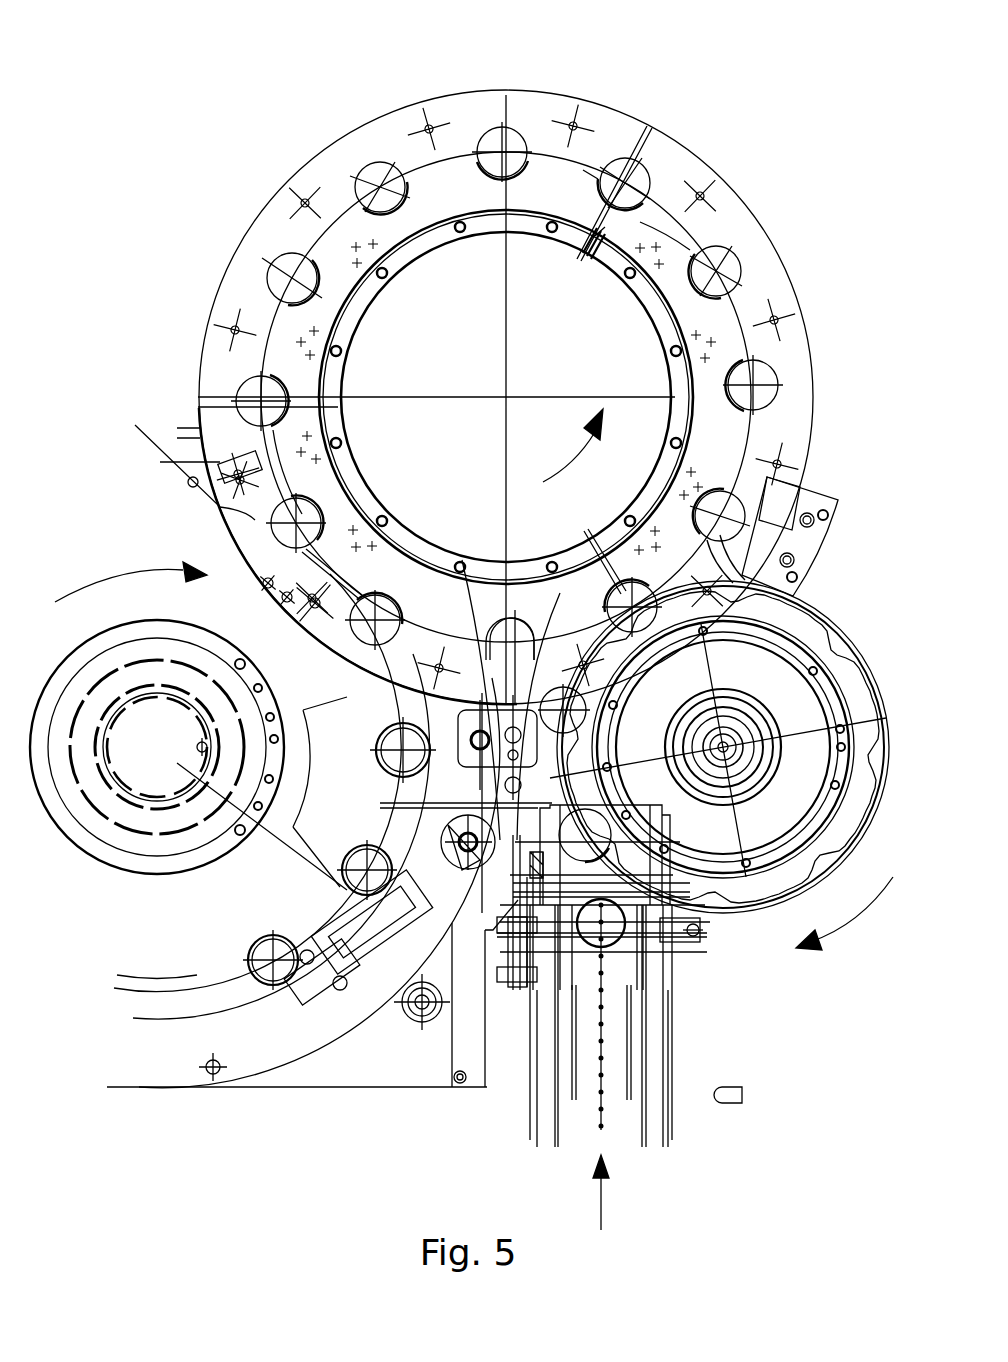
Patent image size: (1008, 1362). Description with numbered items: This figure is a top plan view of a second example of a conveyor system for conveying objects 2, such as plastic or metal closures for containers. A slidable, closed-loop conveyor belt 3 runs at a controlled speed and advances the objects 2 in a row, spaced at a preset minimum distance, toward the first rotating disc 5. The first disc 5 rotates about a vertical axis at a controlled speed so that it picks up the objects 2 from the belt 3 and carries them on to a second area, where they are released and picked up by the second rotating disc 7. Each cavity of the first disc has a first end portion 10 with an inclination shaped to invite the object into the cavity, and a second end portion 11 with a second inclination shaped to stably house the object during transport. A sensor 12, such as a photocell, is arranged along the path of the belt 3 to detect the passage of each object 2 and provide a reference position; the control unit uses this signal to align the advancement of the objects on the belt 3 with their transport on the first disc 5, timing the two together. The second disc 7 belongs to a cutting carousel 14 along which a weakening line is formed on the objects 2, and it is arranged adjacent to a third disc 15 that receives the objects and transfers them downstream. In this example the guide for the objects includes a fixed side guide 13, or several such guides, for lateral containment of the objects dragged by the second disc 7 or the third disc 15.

The objects 2 is at (380, 173).
The conveyor belt 3 is at (585, 1090).
The first rotating disc 5 is at (825, 878).
The second rotating disc 7 is at (667, 230).
The first end portion 10 is at (592, 176).
The second end portion 11 is at (625, 187).
The sensor 12 is at (742, 1095).
The fixed side guide 13 is at (452, 923).
The carousel 14 is at (272, 170).
The third disc 15 is at (173, 947).